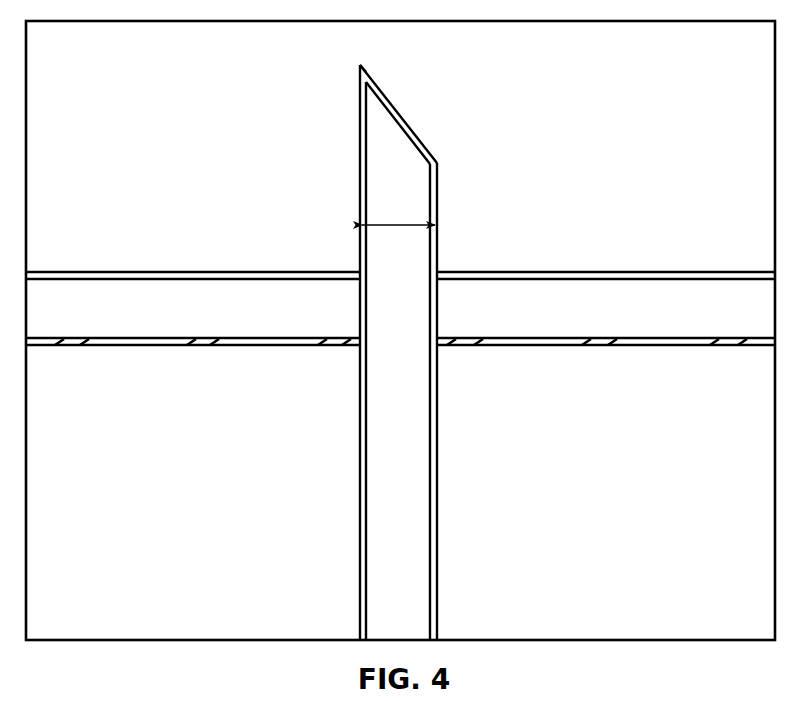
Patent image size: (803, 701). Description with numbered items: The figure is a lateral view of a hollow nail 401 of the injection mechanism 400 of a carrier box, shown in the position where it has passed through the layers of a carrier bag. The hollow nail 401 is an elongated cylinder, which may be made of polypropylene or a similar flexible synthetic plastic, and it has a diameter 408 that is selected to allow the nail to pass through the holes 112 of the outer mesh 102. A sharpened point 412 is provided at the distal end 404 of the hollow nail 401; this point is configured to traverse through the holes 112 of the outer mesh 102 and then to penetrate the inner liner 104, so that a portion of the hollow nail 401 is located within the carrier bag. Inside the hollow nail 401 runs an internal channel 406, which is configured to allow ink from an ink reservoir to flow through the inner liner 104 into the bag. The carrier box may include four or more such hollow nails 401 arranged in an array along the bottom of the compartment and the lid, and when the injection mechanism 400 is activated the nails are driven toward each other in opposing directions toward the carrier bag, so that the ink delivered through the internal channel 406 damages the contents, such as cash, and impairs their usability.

The injection mechanism 400 is at (157, 246).
The inner liner 104 is at (714, 272).
The outer mesh 102 is at (729, 347).
The holes 112 is at (80, 362).
The hollow nail 401 is at (448, 455).
The internal channel 406 is at (393, 508).
The sharpened point 412 is at (408, 100).
The distal end 404 is at (360, 67).
The diameter 408 is at (400, 225).